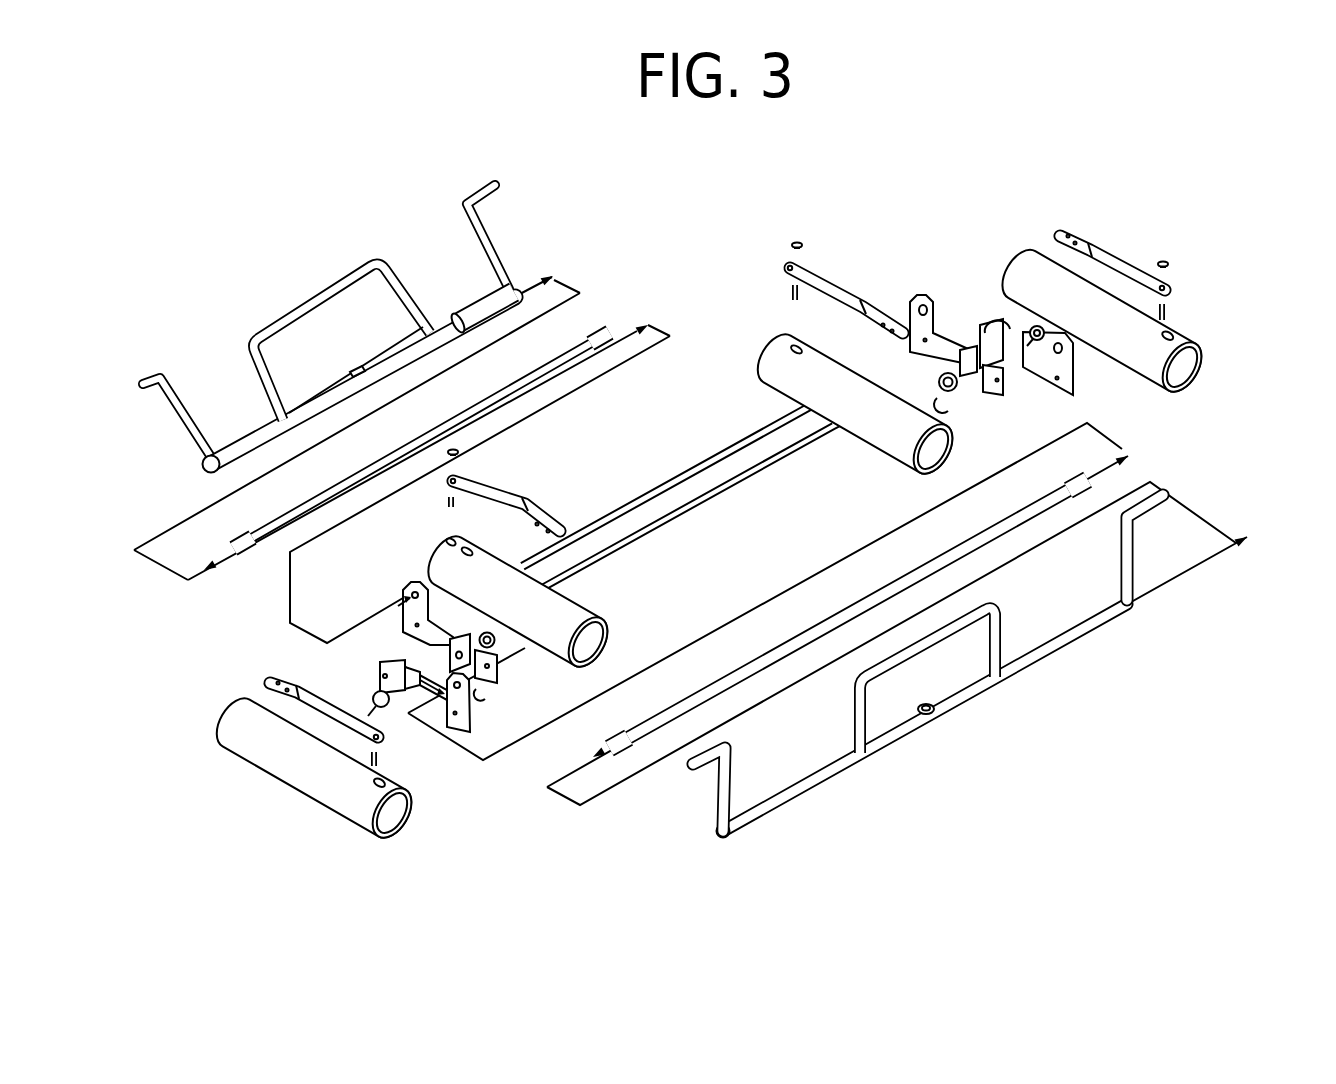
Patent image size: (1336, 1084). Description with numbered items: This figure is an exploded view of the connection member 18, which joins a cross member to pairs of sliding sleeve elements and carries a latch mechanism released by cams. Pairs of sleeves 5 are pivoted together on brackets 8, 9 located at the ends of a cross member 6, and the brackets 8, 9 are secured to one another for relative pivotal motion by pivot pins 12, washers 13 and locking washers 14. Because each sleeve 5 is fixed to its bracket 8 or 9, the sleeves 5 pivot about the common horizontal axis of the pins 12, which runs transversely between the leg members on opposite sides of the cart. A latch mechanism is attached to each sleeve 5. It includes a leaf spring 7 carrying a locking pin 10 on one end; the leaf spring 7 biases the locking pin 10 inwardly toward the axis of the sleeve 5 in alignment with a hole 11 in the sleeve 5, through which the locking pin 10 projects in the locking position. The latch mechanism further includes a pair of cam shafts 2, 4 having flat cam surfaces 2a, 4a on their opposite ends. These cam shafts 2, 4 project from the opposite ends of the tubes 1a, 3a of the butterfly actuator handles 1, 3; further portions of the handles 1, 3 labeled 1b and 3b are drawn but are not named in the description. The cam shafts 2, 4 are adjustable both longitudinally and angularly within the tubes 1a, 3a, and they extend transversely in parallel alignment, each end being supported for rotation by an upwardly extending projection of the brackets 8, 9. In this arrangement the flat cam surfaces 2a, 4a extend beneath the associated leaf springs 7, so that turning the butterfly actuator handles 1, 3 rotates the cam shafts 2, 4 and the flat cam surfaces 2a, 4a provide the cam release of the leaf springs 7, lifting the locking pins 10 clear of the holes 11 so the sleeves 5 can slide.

The butterfly actuator handle 1 is at (312, 295).
The tube 1a is at (270, 418).
The right bent leg of bar 1 1b is at (492, 240).
The cam shaft 2 is at (565, 352).
The flat cam surface 2a is at (603, 352).
The butterfly actuator handle 3 is at (913, 648).
The tube 3a is at (826, 790).
The right bent leg of bar 3 3b is at (1117, 590).
The cam shaft 4 is at (606, 736).
The flat cam surface 4a is at (632, 762).
The sleeve 5 is at (596, 616).
The cross member 6 is at (757, 475).
The leaf spring 7 is at (456, 476).
The bracket 8 is at (400, 592).
The bracket 9 is at (916, 296).
The locking pin 10 is at (450, 498).
The hole 11 is at (446, 543).
The pivot pin 12 is at (998, 323).
The washer 13 is at (958, 392).
The locking washer 14 is at (950, 410).
The connection member 18 is at (422, 837).